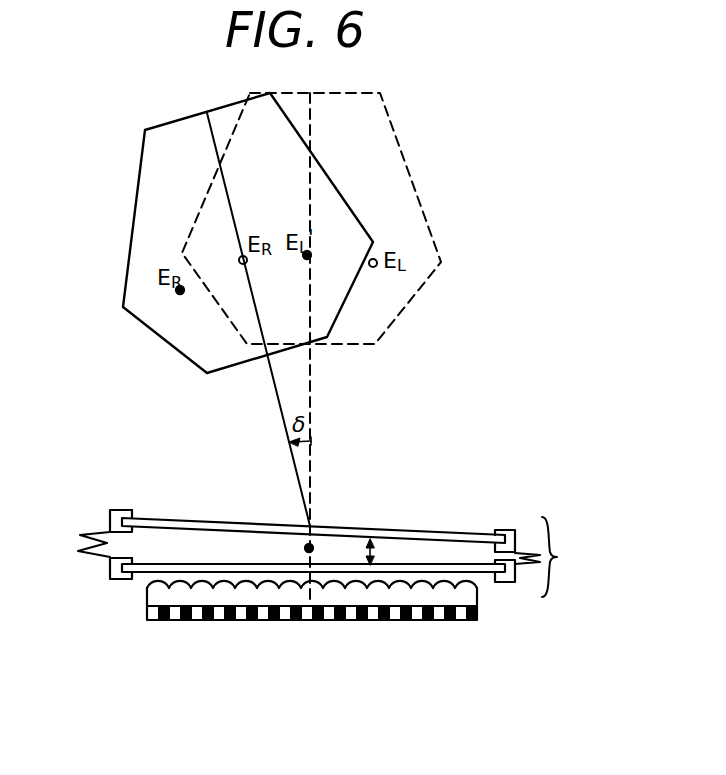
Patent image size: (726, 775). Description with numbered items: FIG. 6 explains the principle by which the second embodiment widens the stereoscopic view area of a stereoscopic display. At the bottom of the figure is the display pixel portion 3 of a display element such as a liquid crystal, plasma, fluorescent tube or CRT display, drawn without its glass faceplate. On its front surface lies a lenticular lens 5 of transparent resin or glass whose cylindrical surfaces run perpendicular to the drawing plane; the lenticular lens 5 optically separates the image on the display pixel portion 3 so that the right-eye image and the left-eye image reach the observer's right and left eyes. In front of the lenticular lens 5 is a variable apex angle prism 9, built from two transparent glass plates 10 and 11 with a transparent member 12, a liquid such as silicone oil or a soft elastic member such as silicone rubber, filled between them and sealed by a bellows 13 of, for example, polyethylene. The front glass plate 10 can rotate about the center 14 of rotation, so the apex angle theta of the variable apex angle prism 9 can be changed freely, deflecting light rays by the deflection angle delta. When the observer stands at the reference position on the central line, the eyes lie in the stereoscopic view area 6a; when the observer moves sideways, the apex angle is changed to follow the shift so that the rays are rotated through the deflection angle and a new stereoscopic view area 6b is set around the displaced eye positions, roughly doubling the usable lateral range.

The display pixel portion 3 is at (477, 620).
The lenticular lens 5 is at (470, 590).
The stereoscopic view area 6a is at (418, 195).
The stereoscopic view area 6b is at (140, 177).
The variable apex angle prism 9 is at (536, 557).
The front glass plate 10 is at (408, 535).
The glass plate 11 is at (448, 574).
The transparent member 12 is at (170, 543).
The bellows 13 is at (95, 532).
The center of rotation 14 is at (312, 548).